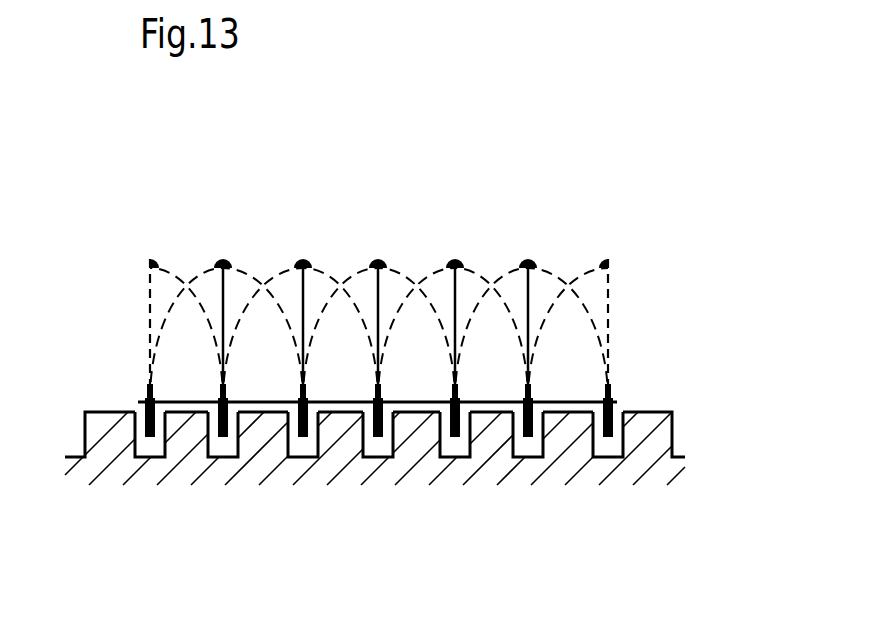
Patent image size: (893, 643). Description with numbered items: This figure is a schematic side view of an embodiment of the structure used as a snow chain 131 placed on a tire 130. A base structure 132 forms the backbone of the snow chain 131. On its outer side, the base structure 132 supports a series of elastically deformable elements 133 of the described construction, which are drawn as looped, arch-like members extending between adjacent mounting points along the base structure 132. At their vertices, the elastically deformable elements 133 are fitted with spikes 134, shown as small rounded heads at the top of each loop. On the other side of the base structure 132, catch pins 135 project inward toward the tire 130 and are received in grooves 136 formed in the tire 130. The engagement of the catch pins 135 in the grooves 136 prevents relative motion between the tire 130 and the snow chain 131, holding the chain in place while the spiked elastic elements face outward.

The tire 130 is at (673, 437).
The snow chain 131 is at (118, 337).
The base structure 132 is at (560, 402).
The elastically deformable elements 133 is at (253, 270).
The spikes 134 is at (153, 256).
The catch pins 135 is at (150, 437).
The grooves 136 is at (223, 449).